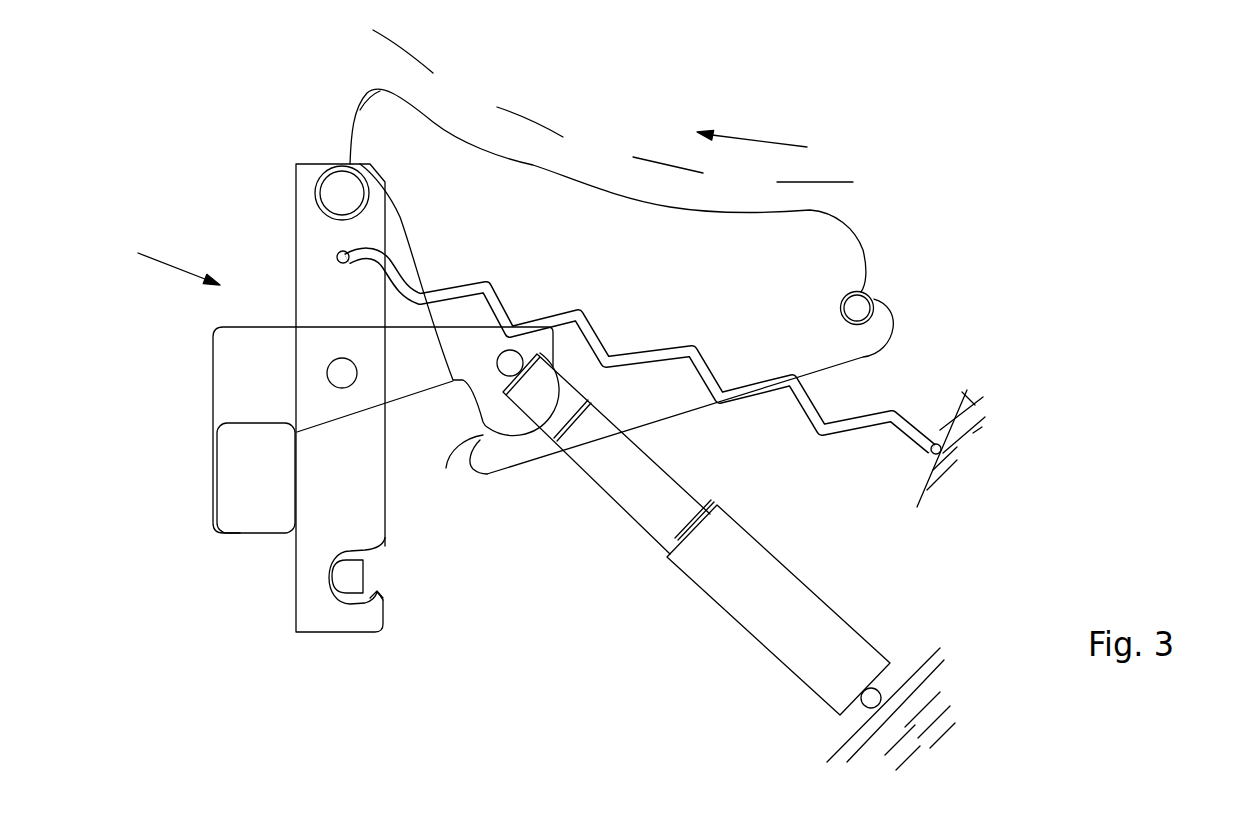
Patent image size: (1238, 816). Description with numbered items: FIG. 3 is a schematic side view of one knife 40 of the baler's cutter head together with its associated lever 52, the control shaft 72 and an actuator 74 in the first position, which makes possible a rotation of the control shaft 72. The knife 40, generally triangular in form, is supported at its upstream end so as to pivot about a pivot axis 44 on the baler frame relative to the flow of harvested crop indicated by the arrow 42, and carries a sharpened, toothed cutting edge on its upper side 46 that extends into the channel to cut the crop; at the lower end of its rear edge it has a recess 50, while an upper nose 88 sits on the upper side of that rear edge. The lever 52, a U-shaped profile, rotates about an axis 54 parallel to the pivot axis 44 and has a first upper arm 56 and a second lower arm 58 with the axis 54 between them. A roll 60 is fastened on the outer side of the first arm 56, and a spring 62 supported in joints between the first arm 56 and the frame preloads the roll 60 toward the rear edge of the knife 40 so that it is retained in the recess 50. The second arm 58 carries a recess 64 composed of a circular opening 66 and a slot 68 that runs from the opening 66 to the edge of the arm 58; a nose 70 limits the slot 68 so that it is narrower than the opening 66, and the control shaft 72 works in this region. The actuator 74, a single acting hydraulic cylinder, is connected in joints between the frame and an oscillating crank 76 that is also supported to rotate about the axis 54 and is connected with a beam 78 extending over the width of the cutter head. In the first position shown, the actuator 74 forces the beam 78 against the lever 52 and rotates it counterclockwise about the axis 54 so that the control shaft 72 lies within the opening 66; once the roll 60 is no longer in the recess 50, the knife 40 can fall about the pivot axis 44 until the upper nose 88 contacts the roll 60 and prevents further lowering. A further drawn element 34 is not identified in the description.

The seat bottom 34 is at (853, 182).
The knife 40 is at (523, 223).
The arrow 42 is at (757, 143).
The pivot axis 44 is at (857, 308).
The upper side 46 is at (500, 155).
The recess 50 is at (446, 468).
The lever 52 is at (161, 258).
The axis 54 is at (345, 374).
The first upper arm 56 is at (317, 248).
The second lower arm 58 is at (360, 521).
The roll 60 is at (315, 185).
The spring 62 is at (810, 415).
The recess 64 is at (377, 592).
The circular opening 66 is at (325, 569).
The slot 68 is at (383, 545).
The nose 70 is at (380, 597).
The control shaft 72 is at (357, 575).
The actuator 74 is at (733, 620).
The oscillating crank 76 is at (250, 368).
The beam 78 is at (232, 480).
The upper nose 88 is at (377, 120).